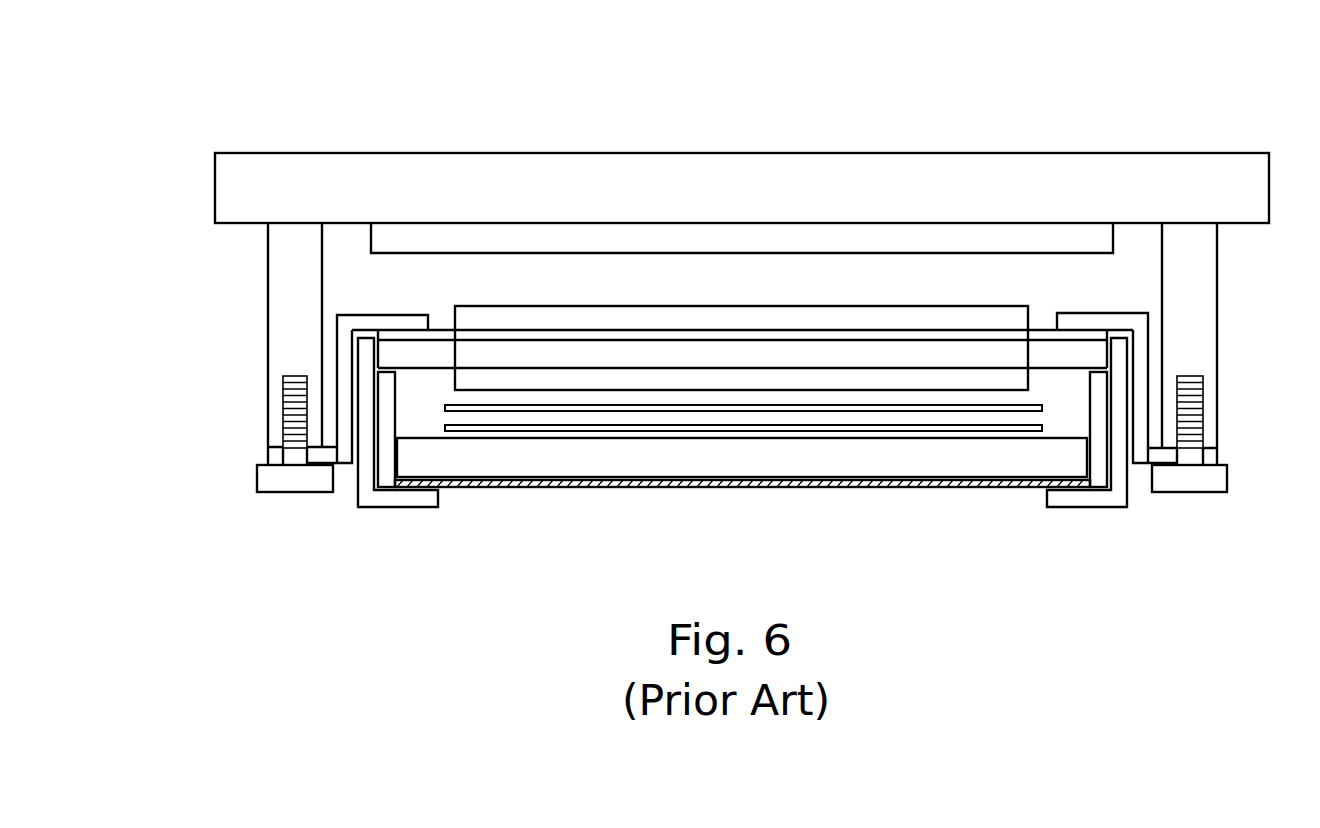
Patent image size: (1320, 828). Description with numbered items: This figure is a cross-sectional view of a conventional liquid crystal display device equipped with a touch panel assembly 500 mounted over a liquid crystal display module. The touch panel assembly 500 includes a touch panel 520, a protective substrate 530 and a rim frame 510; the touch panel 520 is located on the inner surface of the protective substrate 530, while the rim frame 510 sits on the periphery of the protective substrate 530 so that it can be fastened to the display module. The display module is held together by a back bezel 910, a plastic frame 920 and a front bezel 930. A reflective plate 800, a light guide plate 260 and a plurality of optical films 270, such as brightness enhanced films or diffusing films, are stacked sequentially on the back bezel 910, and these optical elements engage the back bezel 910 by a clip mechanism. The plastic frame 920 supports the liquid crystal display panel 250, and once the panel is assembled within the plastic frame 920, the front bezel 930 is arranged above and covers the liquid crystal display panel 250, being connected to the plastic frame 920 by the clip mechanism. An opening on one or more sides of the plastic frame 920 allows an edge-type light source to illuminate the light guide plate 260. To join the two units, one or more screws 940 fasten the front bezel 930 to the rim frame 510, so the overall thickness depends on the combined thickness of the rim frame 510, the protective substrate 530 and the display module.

The touch panel assembly 500 is at (1188, 60).
The rim frame 510 is at (1185, 242).
The touch panel 520 is at (1015, 238).
The protective substrate 530 is at (1107, 167).
The liquid crystal display panel 250 is at (557, 352).
The light guide plate 260 is at (645, 457).
The optical films 270 is at (847, 405).
The reflective plate 800 is at (720, 488).
The back bezel 910 is at (422, 498).
The plastic frame 920 is at (387, 467).
The front bezel 930 is at (347, 450).
The screws 940 is at (270, 478).